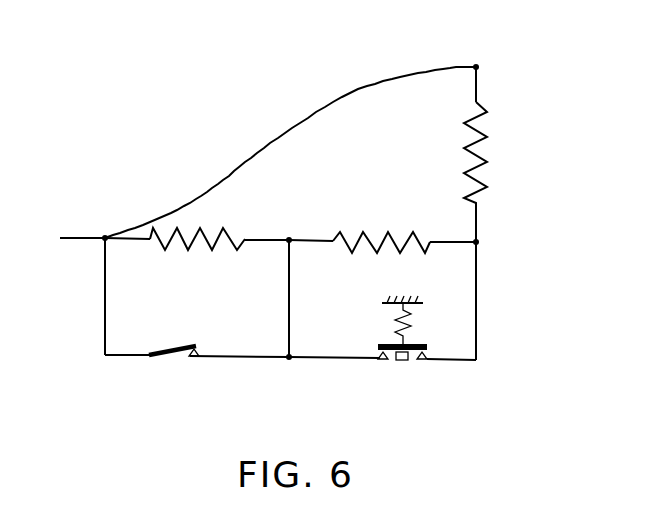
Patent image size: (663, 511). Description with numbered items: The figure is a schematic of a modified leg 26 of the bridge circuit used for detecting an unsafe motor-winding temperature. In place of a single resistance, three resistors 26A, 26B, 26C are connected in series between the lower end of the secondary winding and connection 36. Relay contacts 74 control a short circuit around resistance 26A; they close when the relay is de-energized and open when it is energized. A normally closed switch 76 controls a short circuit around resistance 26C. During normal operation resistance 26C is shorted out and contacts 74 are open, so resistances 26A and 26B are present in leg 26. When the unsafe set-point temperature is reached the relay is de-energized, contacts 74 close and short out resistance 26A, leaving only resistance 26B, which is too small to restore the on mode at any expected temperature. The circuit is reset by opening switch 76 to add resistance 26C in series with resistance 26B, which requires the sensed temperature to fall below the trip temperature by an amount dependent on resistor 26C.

The leg 26 is at (310, 117).
The resistor 26A is at (183, 233).
The resistor 26B is at (477, 153).
The resistor 26C is at (368, 233).
The connection 36 is at (476, 67).
The contacts 74 is at (172, 352).
The normally closed switch 76 is at (420, 358).